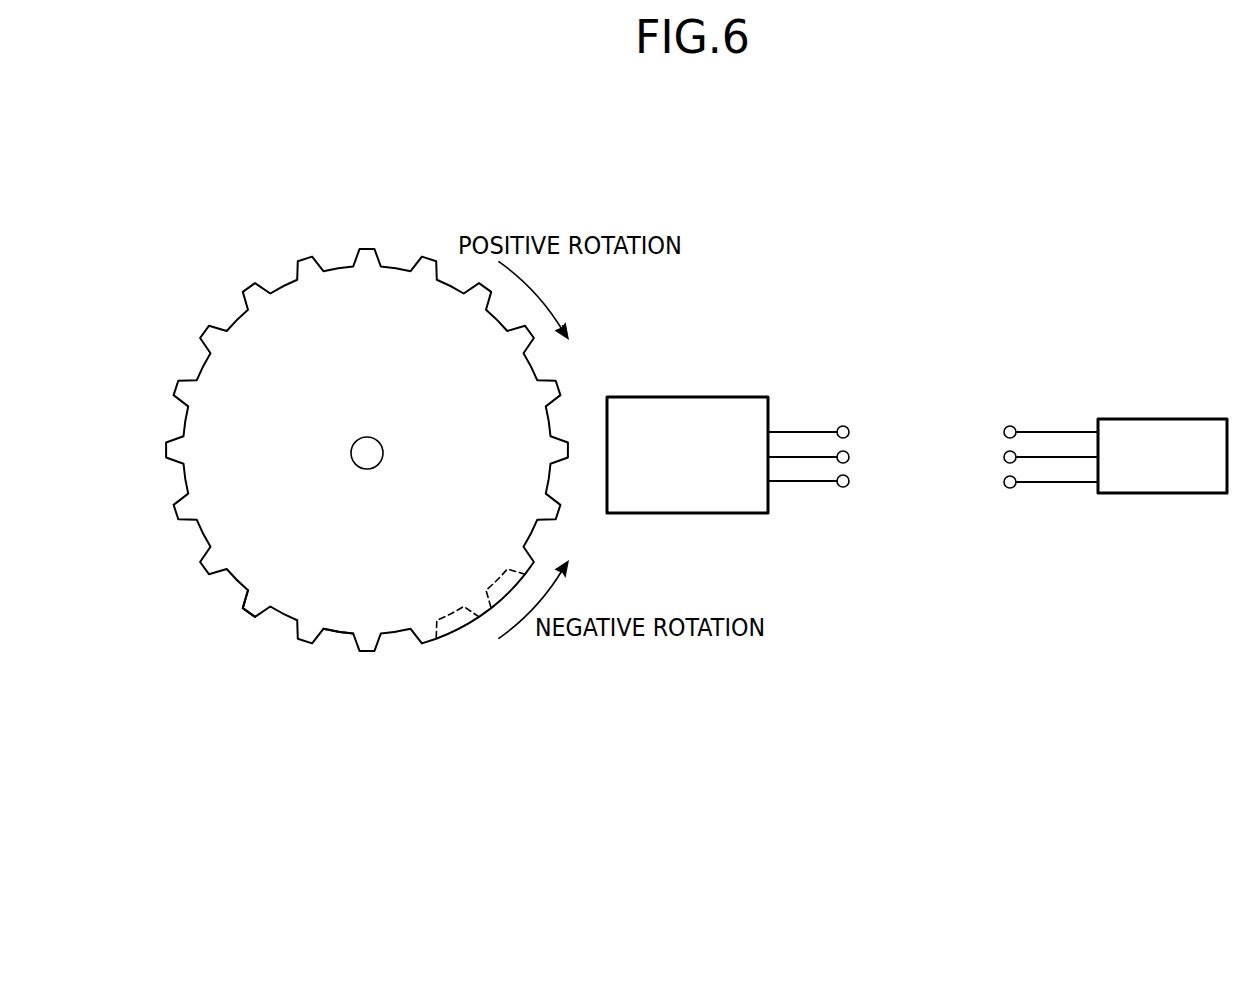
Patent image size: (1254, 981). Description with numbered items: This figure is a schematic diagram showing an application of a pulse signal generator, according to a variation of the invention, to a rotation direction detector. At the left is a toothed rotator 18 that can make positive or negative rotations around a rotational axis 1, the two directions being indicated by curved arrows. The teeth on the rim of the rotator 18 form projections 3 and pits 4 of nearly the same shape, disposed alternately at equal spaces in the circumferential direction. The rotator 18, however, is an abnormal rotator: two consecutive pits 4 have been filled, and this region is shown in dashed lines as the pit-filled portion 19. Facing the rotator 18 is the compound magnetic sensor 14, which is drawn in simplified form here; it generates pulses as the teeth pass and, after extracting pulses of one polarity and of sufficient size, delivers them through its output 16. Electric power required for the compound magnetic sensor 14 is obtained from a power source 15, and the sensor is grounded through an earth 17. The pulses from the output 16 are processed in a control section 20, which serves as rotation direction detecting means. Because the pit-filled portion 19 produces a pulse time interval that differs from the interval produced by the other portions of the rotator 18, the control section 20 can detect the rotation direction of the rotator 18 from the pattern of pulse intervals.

The rotational axis 1 is at (353, 468).
The projections 3 is at (247, 615).
The pits 4 is at (338, 634).
The compound magnetic sensor 14 is at (745, 494).
The power source 15 is at (849, 430).
The output 16 is at (849, 456).
The earth 17 is at (849, 482).
The rotator 18 is at (340, 302).
The pit-filled portion 19 is at (492, 603).
The control section 20 is at (1139, 433).